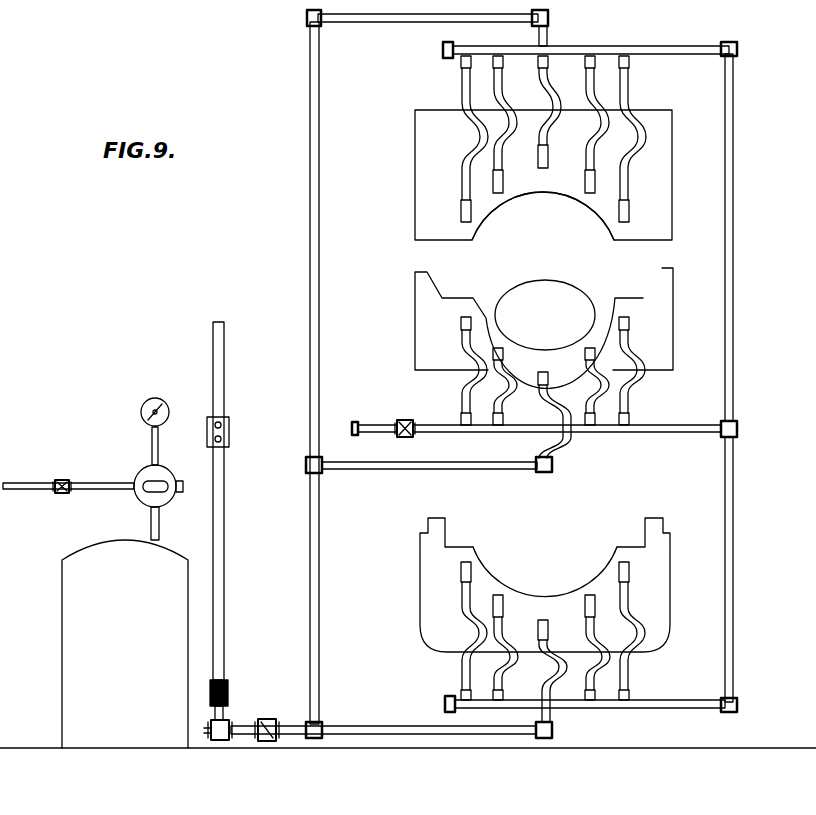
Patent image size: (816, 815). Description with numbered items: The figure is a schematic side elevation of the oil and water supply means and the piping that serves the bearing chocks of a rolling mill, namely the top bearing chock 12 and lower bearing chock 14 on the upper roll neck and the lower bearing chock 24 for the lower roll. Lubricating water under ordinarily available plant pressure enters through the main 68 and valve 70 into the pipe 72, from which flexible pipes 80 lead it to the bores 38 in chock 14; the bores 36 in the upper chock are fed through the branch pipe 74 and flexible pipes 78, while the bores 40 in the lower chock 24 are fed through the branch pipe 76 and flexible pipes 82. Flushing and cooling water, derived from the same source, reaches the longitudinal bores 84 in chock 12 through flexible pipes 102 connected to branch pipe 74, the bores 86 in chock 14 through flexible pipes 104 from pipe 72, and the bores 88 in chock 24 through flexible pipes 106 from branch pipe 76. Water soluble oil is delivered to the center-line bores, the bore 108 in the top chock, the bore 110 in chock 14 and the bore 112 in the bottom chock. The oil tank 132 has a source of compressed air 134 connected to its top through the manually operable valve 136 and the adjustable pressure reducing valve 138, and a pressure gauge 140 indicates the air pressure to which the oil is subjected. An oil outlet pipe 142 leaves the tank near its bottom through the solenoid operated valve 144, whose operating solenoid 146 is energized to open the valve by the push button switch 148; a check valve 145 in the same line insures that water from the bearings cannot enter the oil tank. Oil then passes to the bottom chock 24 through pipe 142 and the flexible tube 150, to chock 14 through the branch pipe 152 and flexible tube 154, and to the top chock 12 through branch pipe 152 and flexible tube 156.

The top bearing chock 12 is at (665, 177).
The lower bearing chock 14 is at (666, 363).
The lower bearing chock 24 is at (424, 580).
The longitudinal bore 36 is at (502, 202).
The longitudinal bore 38 is at (526, 283).
The longitudinal bore 40 is at (500, 587).
The main 68 is at (362, 424).
The valve 70 is at (410, 437).
The pipe 72 is at (663, 432).
The branch pipe 74 is at (733, 210).
The branch pipe 76 is at (733, 571).
The flexible pipes 78 is at (492, 100).
The flexible pipes 80 is at (503, 396).
The flexible pipes 82 is at (500, 668).
The longitudinal bores 84 is at (470, 221).
The longitudinal bores 86 is at (464, 318).
The longitudinal bores 88 is at (466, 562).
The flexible pipes 102 is at (477, 146).
The flexible pipes 104 is at (483, 358).
The flexible pipes 106 is at (462, 608).
The longitudinal bore 108 is at (543, 170).
The longitudinal bore 110 is at (545, 371).
The longitudinal bore 112 is at (545, 618).
The oil tank 132 is at (146, 684).
The source of compressed air 134 is at (32, 483).
The manually operable valve 136 is at (65, 495).
The adjustable pressure reducing valve 138 is at (142, 468).
The pressure gauge 140 is at (160, 399).
The oil outlet pipe 142 is at (353, 726).
The solenoid operated valve 144 is at (222, 742).
The check valve 145 is at (272, 742).
The operating solenoid 146 is at (230, 688).
The push button switch 148 is at (230, 425).
The flexible tube 150 is at (560, 682).
The branch pipe 152 is at (310, 517).
The flexible tube 154 is at (566, 422).
The flexible tube 156 is at (549, 75).